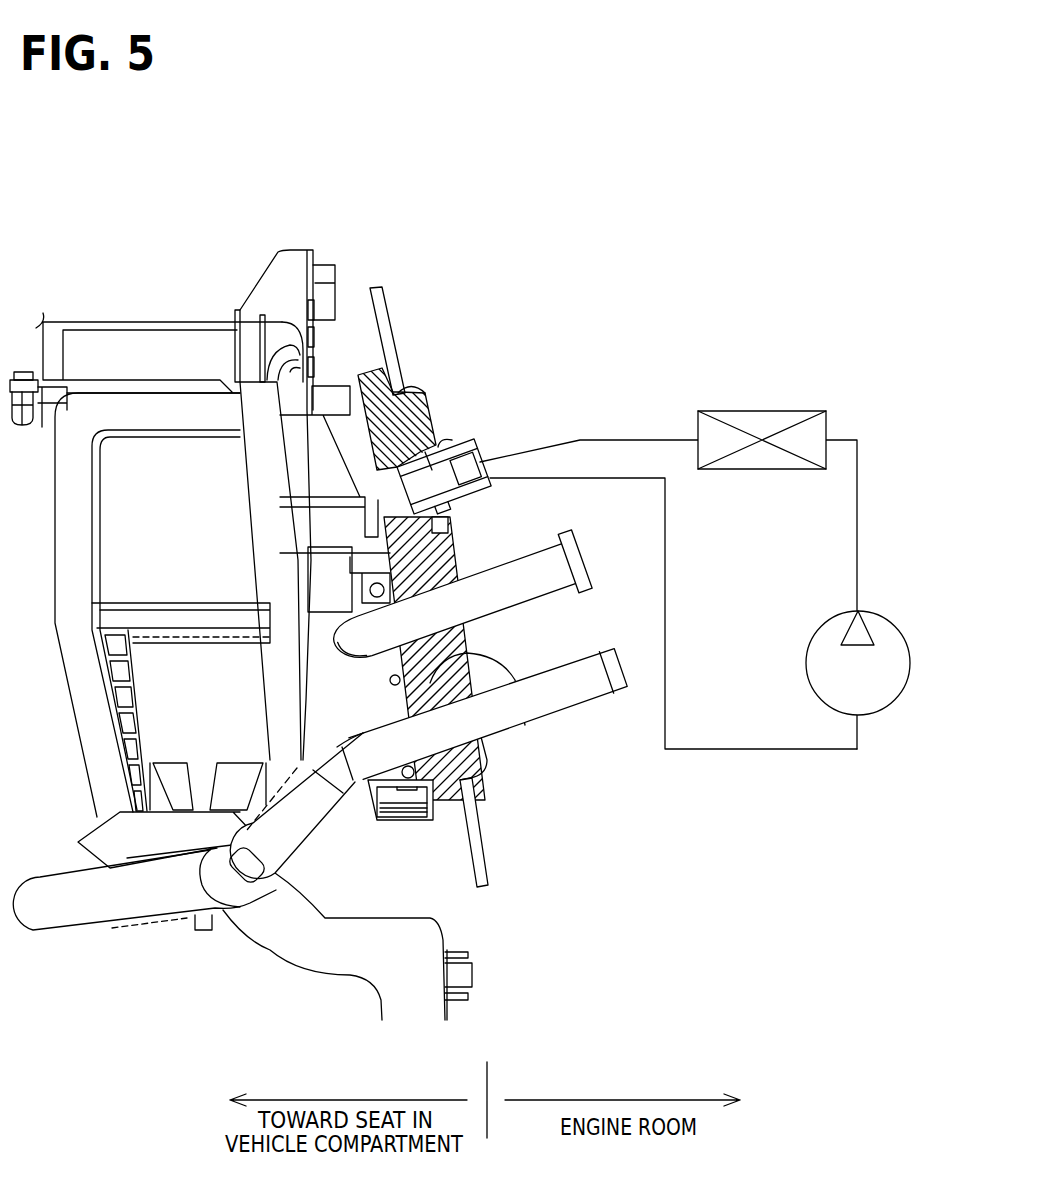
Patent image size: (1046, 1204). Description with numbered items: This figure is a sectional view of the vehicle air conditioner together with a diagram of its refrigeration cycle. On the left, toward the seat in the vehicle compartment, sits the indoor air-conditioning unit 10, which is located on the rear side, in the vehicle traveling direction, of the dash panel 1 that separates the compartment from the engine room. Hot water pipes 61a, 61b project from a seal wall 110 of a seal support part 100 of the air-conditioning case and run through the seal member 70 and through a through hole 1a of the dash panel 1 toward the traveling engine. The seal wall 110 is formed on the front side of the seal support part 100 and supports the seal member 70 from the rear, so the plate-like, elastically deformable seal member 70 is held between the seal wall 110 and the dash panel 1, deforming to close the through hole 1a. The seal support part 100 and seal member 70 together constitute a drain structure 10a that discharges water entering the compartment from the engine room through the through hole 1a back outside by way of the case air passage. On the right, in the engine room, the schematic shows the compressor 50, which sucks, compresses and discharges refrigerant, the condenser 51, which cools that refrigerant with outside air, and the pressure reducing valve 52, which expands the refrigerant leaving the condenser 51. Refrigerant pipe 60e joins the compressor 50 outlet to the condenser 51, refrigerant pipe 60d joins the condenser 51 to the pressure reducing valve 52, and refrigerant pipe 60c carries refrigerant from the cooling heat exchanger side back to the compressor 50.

The dash panel 1 is at (383, 300).
The through hole 1a is at (408, 397).
The indoor air-conditioning unit 10 is at (76, 764).
The drain structure 10a is at (499, 794).
The compressor 50 is at (880, 712).
The condenser 51 is at (769, 409).
The pressure reducing valve 52 is at (490, 443).
The refrigerant pipe 60c is at (631, 480).
The refrigerant pipe 60d is at (629, 439).
The refrigerant pipe 60e is at (857, 574).
The hot water pipe 61a is at (547, 572).
The hot water pipe 61b is at (605, 680).
The seal member 70 is at (446, 573).
The seal support part 100 is at (413, 834).
The seal wall 110 is at (467, 655).